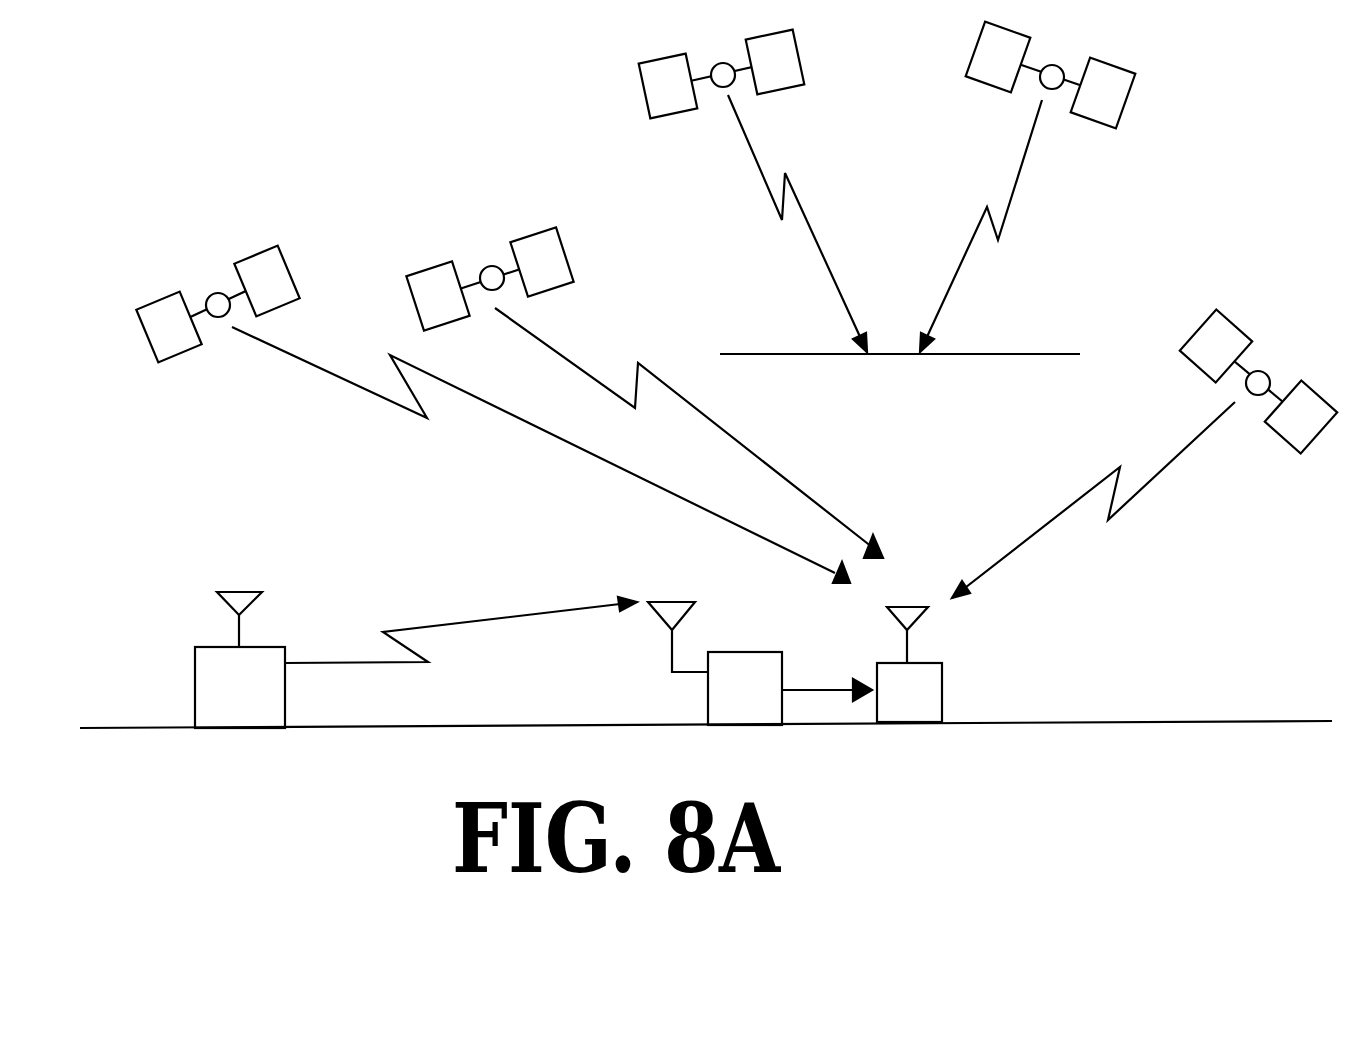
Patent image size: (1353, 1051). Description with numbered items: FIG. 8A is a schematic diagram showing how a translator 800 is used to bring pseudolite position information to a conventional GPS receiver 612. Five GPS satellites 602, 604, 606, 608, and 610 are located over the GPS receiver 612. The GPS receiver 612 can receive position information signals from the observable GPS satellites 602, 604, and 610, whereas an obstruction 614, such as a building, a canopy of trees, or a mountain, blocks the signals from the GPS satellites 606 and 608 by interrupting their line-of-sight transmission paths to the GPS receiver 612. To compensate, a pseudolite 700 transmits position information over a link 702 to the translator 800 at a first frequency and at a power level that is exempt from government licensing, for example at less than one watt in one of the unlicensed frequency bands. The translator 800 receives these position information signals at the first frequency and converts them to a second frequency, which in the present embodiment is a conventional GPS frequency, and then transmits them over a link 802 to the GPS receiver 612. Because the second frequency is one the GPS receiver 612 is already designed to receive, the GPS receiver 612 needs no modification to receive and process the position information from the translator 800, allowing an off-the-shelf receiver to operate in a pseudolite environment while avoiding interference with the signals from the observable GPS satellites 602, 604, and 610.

The GPS satellite 602 is at (323, 238).
The GPS satellite 604 is at (562, 240).
The GPS satellite 606 is at (640, 67).
The GPS satellite 608 is at (1133, 93).
The GPS satellite 610 is at (1235, 322).
The GPS receiver 612 is at (942, 690).
The obstruction 614 is at (1025, 352).
The pseudolite 700 is at (197, 655).
The link 702 is at (480, 620).
The translator 800 is at (708, 698).
The link 802 is at (810, 685).